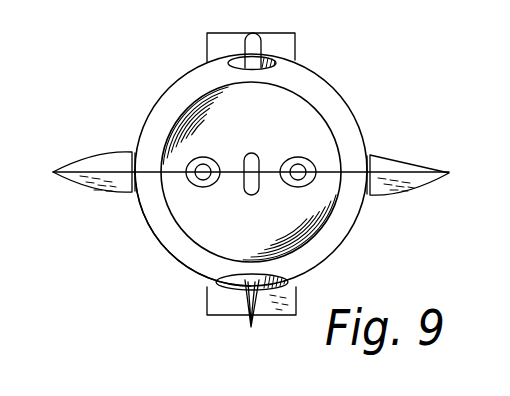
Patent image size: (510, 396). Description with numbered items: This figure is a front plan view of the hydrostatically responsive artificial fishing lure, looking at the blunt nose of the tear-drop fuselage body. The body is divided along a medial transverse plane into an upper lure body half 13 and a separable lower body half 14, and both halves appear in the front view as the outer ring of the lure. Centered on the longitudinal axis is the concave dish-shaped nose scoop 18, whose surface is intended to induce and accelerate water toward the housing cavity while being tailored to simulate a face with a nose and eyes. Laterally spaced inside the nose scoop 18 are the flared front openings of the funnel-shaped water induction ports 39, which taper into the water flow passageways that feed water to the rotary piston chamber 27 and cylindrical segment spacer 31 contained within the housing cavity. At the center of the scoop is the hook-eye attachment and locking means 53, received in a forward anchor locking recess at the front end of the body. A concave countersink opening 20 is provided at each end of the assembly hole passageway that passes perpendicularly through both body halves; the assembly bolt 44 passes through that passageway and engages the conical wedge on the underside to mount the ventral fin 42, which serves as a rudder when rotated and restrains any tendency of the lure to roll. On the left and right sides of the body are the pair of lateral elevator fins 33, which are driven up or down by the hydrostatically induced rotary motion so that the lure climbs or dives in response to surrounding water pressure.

The upper lure body half 13 is at (157, 100).
The lower body half 14 is at (149, 233).
The nose scoop 18 is at (268, 249).
The concave countersink opening 20 is at (236, 65).
The rotary piston chamber 27 is at (207, 300).
The cylindrical segment spacer 31 is at (297, 43).
The lateral elevator fins 33 is at (106, 152).
The funnel-shaped water induction ports 39 is at (210, 187).
The ventral fin 42 is at (253, 318).
The assembly bolt 44 is at (251, 33).
The hook-eye attachment and locking means 53 is at (256, 128).